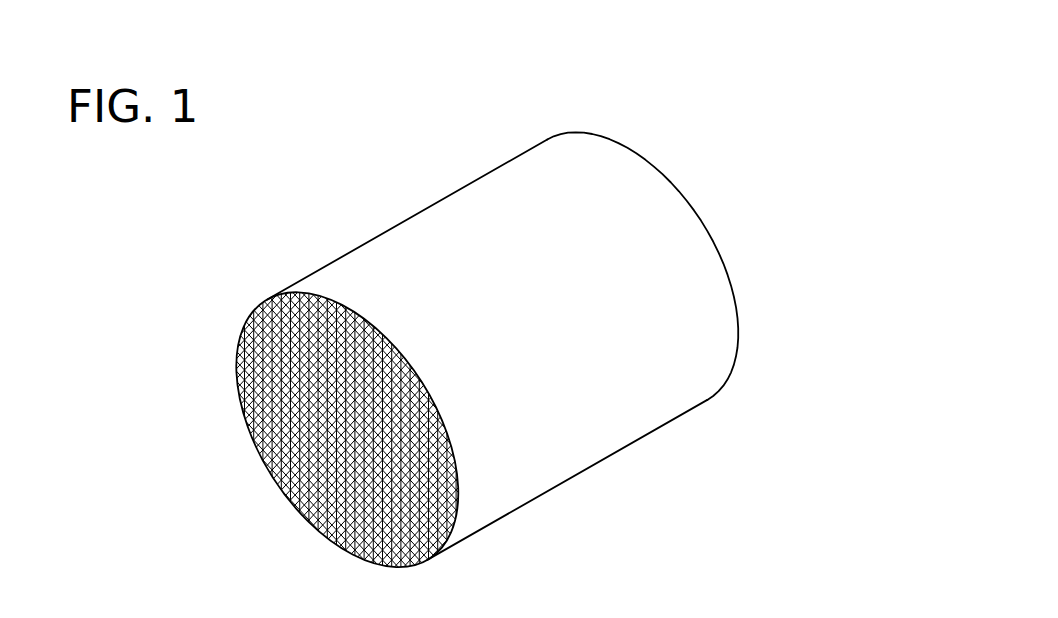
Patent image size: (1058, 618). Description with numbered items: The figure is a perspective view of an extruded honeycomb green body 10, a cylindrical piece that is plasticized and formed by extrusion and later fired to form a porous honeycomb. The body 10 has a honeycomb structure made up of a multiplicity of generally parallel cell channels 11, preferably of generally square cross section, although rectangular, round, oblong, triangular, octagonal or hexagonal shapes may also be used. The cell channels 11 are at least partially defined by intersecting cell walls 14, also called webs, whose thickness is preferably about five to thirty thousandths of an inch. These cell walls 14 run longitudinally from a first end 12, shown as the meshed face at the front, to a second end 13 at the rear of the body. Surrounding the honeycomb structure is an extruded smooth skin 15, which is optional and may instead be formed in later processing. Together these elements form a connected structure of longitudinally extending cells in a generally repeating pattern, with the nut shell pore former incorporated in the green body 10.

The honeycomb green body 10 is at (797, 176).
The cell channels 11 is at (258, 370).
The first end 12 is at (246, 321).
The second end 13 is at (673, 182).
The cell walls 14 is at (262, 413).
The skin 15 is at (458, 212).